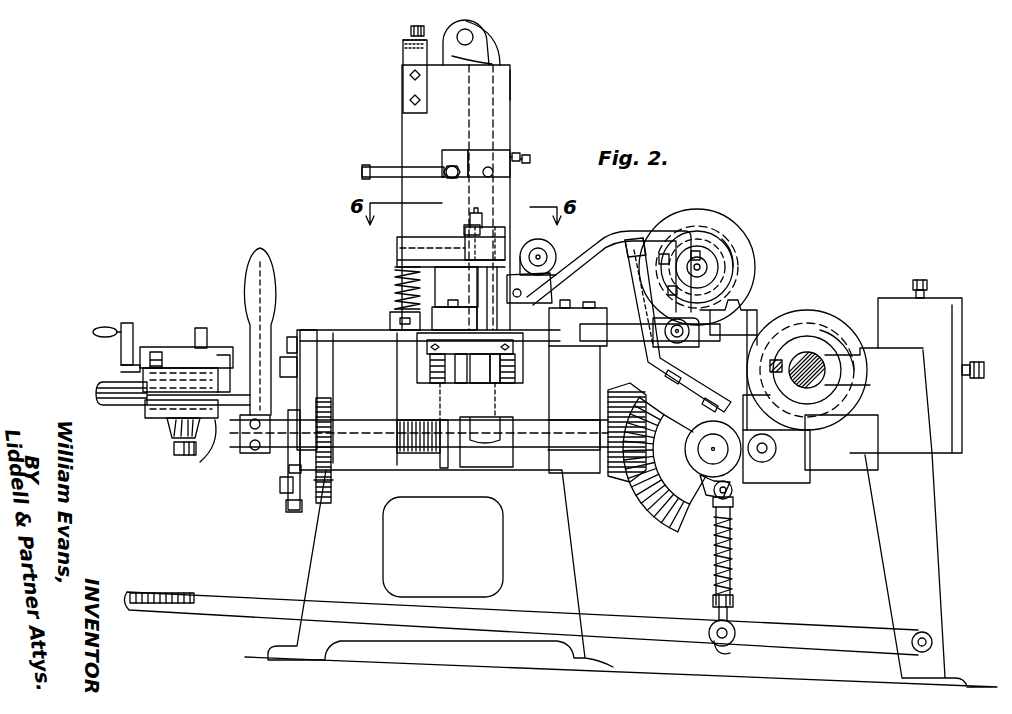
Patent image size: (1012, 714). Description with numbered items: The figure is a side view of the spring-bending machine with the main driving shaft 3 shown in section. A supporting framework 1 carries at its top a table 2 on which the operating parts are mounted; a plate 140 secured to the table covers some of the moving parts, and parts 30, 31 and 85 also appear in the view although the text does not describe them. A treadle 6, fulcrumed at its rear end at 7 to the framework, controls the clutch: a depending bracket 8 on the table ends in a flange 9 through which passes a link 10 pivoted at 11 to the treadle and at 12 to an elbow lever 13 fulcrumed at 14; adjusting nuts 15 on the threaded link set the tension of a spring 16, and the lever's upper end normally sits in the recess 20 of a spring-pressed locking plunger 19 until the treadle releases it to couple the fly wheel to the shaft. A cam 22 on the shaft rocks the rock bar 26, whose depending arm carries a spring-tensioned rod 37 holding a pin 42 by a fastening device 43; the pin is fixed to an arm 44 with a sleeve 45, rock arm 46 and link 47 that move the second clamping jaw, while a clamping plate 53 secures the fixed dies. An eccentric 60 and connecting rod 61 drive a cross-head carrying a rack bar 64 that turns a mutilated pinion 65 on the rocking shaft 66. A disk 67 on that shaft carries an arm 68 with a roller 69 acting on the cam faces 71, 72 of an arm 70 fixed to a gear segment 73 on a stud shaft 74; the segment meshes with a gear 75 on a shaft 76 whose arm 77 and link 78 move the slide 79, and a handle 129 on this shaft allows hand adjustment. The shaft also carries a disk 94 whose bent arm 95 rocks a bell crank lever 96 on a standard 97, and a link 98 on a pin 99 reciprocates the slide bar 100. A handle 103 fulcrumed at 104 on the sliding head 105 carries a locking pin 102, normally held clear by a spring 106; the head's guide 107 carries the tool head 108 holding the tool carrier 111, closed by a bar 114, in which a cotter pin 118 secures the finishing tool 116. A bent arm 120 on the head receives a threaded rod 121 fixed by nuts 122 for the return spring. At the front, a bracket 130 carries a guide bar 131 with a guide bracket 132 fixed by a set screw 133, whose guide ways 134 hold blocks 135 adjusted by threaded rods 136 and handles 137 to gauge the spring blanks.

The supporting framework 1 is at (940, 488).
The table 2 is at (920, 432).
The main driving shaft 3 is at (822, 390).
The treadle 6 is at (352, 616).
The treadle fulcrum 7 is at (932, 640).
The depending bracket 8 is at (733, 495).
The laterally extending flange 9 is at (735, 590).
The link 10 is at (730, 615).
The pivotal connection 11 is at (722, 647).
The pivotal connection 12 is at (707, 502).
The elbow lever 13 is at (808, 440).
The fulcrum 14 is at (778, 452).
The adjusting nuts 15 is at (734, 516).
The spring 16 is at (735, 560).
The spring-pressed locking plunger 19 is at (777, 358).
The slot or recess 20 is at (738, 366).
The cam 22 is at (805, 312).
The rock bar 26 is at (287, 357).
The screw 30 is at (980, 364).
The screw 31 is at (928, 284).
The rod 37 is at (290, 498).
The pin 42 is at (285, 470).
The fastening device 43 is at (270, 452).
The arm 44 is at (324, 482).
The sleeve 45 is at (420, 455).
The rock arm 46 is at (447, 462).
The link 47 is at (458, 370).
The clamping plate 53 is at (454, 315).
The eccentric 60 is at (823, 338).
The connecting rod 61 is at (850, 318).
The rack bar 64 is at (748, 300).
The mutilated pinion 65 is at (734, 262).
The oscillating or rocking shaft 66 is at (695, 251).
The disk 67 is at (703, 257).
The arm 68 is at (664, 254).
The roller 69 is at (681, 343).
The arm 70 is at (634, 240).
The cam face 71 is at (648, 338).
The cam face 72 is at (632, 262).
The gear segment 73 is at (655, 502).
The stud shaft 74 is at (710, 449).
The gear 75 is at (625, 478).
The shaft 76 is at (330, 470).
The arm 77 is at (492, 440).
The link 78 is at (520, 372).
The slide 79 is at (428, 365).
The block 85 is at (578, 386).
The disk 94 is at (730, 221).
The bent arm 95 is at (597, 240).
The bell crank lever 96 is at (553, 247).
The standard 97 is at (395, 288).
The link 98 is at (482, 57).
The pin 99 is at (473, 37).
The slide bar 100 is at (511, 66).
The locking pin 102 is at (448, 164).
The handle 103 is at (378, 167).
The fulcrum 104 is at (523, 163).
The sliding head 105 is at (511, 90).
The spring 106 is at (490, 163).
The guide 107 is at (404, 241).
The tool head 108 is at (466, 246).
The tool carrier 111 is at (465, 230).
The bar 114 is at (470, 218).
The finishing tool 116 is at (510, 300).
The cotter pin 118 is at (850, 368).
The bent arm 120 is at (412, 84).
The threaded rod 121 is at (411, 31).
The nuts 122 is at (410, 44).
The handle 129 is at (258, 268).
The bracket 130 is at (307, 330).
The guide bar 131 is at (105, 386).
The guide bracket 132 is at (160, 402).
The set screw 133 is at (174, 449).
The guide ways 134 is at (205, 455).
The blocks 135 is at (168, 350).
The threaded rods 136 is at (156, 353).
The handles 137 is at (124, 325).
The plate 140 is at (392, 324).